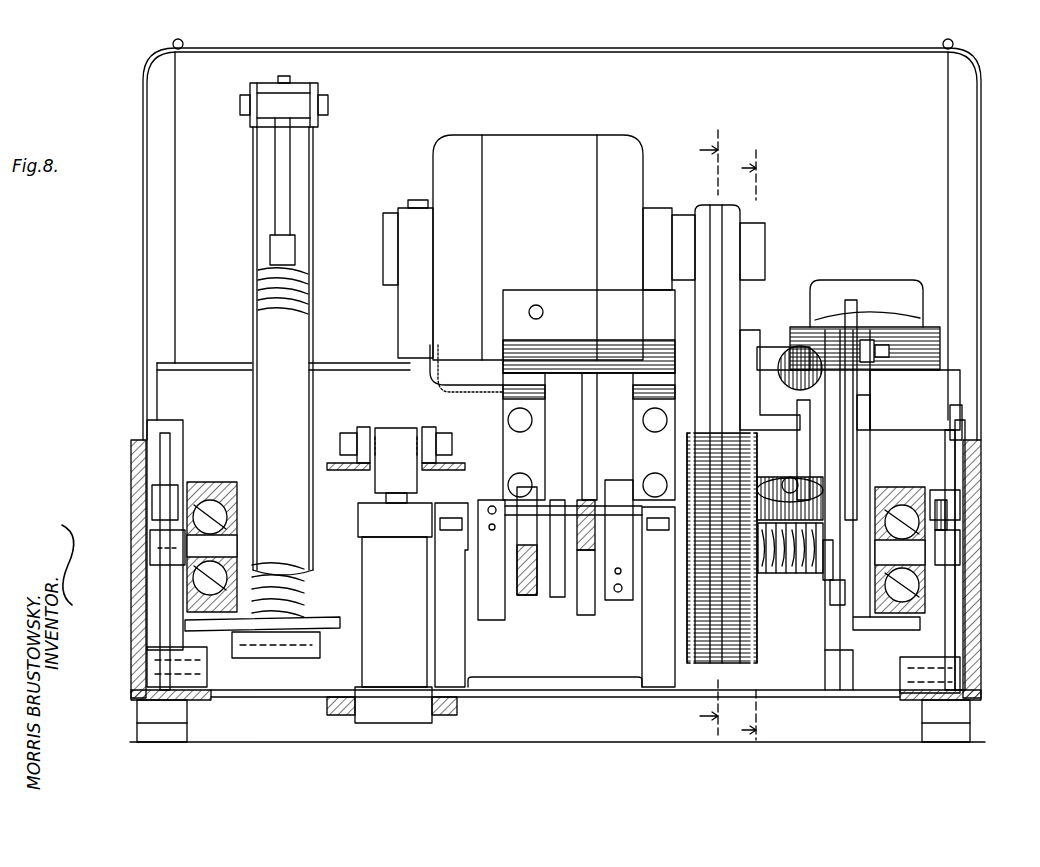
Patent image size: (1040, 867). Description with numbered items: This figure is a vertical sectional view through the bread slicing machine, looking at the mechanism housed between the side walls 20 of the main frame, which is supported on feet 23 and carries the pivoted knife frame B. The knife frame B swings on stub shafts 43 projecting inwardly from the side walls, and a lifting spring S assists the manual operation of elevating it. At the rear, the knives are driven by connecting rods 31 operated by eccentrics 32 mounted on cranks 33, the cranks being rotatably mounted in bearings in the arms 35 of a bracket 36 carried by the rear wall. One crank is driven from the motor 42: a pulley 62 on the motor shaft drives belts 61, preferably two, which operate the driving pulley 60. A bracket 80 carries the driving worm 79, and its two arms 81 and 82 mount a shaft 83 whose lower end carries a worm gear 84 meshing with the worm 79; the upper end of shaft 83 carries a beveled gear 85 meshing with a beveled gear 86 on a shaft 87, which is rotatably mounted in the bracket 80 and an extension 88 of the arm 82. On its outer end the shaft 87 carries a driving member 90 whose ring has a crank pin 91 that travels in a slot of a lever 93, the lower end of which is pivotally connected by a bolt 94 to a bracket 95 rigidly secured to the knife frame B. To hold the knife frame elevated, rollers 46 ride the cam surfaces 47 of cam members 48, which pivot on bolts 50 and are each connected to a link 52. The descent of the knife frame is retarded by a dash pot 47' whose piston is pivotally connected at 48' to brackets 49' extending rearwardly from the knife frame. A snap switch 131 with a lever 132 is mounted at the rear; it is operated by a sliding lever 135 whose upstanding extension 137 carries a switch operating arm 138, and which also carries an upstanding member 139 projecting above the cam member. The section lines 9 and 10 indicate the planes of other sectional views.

The side walls 20 is at (978, 648).
The feet 23 is at (165, 722).
The lifting spring S is at (292, 300).
The motor 42 is at (585, 140).
The belts 61 is at (722, 302).
The extension of the arm 88 is at (722, 318).
The arm 82 is at (745, 405).
The pulley 62 is at (745, 212).
The driving pulley 60 is at (748, 645).
The section line 10 is at (722, 432).
The section line 9 is at (757, 447).
The snap switch 131 is at (928, 316).
The lever 132 is at (895, 345).
The switch operating arm 138 is at (866, 345).
The upstanding extension 137 is at (925, 430).
The upstanding member 139 is at (962, 412).
The crank pin 91 is at (872, 405).
The beveled gear 85 is at (765, 378).
The shaft 87 is at (780, 345).
The beveled gear 86 is at (808, 352).
The driving member 90 is at (851, 300).
The shaft 83 is at (810, 450).
The lever 93 is at (862, 470).
The arm 81 is at (777, 482).
The worm gear 84 is at (778, 504).
The driving worm 79 is at (790, 572).
The bracket 95 is at (840, 573).
The bolt 94 is at (838, 600).
The bracket 80 is at (827, 638).
The knife frame B is at (925, 597).
The cam members 48 is at (557, 560).
The cam surfaces 47 is at (556, 555).
The rollers 46 is at (940, 478).
The lever 135 is at (960, 518).
The link 52 is at (960, 563).
The stub shafts 43 is at (215, 545).
The stub shafts or bolts 50 is at (208, 670).
The dash pot 47' is at (392, 575).
The pivotal connection 48' is at (398, 432).
The brackets 49' is at (405, 453).
The arms 35 is at (450, 650).
The bracket 36 is at (551, 661).
The cranks 33 is at (615, 490).
The connecting rods 31 is at (585, 505).
The eccentrics 32 is at (545, 500).